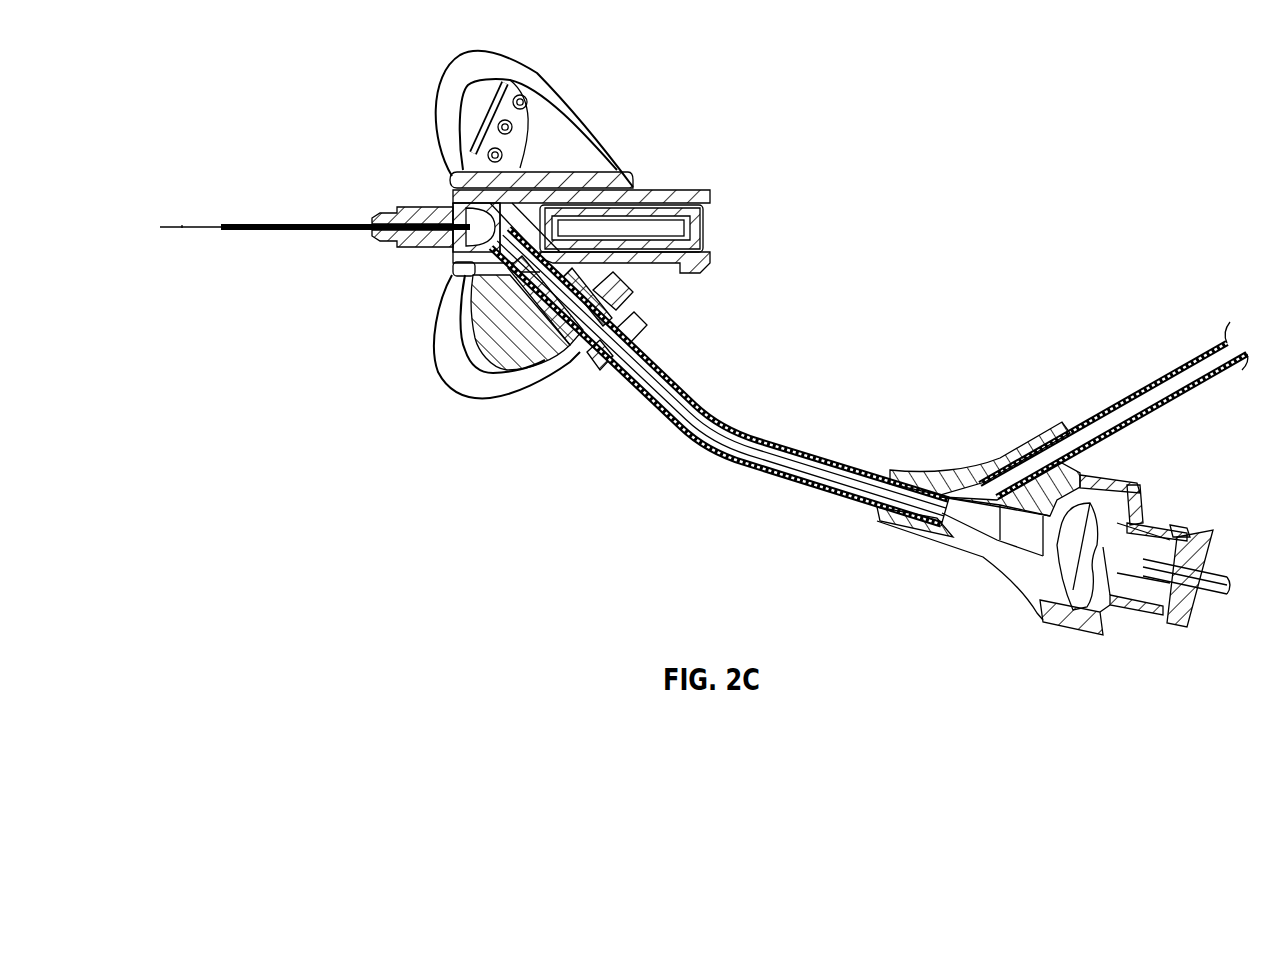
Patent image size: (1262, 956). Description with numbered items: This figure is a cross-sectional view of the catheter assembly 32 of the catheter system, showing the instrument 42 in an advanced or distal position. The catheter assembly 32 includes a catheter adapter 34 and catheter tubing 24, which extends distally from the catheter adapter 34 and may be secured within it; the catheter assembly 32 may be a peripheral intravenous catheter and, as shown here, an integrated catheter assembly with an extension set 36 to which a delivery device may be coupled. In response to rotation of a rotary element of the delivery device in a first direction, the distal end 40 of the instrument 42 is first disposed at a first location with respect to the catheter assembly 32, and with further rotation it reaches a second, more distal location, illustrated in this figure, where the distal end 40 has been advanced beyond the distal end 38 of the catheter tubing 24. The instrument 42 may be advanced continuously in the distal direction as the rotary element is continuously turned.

The catheter tubing 24 is at (314, 222).
The catheter assembly 32 is at (1098, 159).
The catheter adapter 34 is at (660, 262).
The extension set 36 is at (950, 487).
The distal end of the catheter tubing 38 is at (218, 225).
The distal end of the instrument 40 is at (160, 229).
The instrument 42 is at (182, 225).